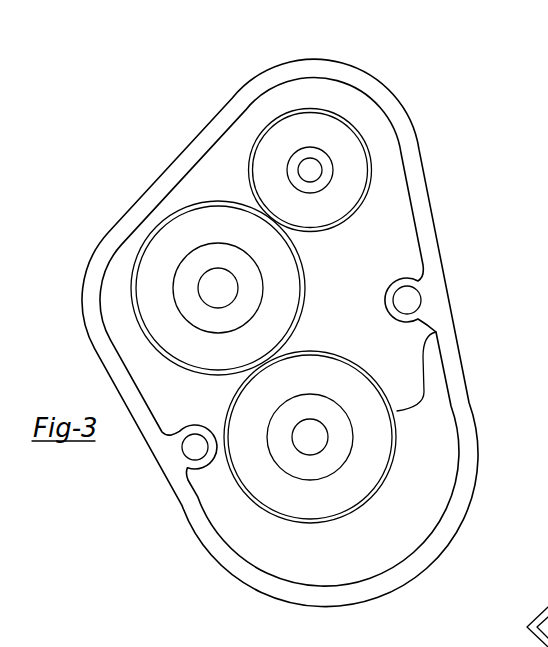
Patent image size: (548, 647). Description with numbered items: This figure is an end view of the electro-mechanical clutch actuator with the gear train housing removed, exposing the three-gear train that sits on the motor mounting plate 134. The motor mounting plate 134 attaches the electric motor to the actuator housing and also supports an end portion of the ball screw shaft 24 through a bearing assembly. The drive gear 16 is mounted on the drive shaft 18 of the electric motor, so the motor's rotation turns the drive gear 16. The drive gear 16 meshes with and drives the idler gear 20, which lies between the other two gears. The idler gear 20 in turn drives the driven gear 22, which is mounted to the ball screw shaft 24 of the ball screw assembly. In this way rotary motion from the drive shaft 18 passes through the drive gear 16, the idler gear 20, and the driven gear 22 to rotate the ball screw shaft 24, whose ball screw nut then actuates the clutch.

The drive gear 16 is at (345, 120).
The drive shaft 18 is at (310, 170).
The idler gear 20 is at (312, 291).
The driven gear 22 is at (436, 332).
The ball screw shaft 24 is at (310, 437).
The motor mounting plate 134 is at (390, 195).